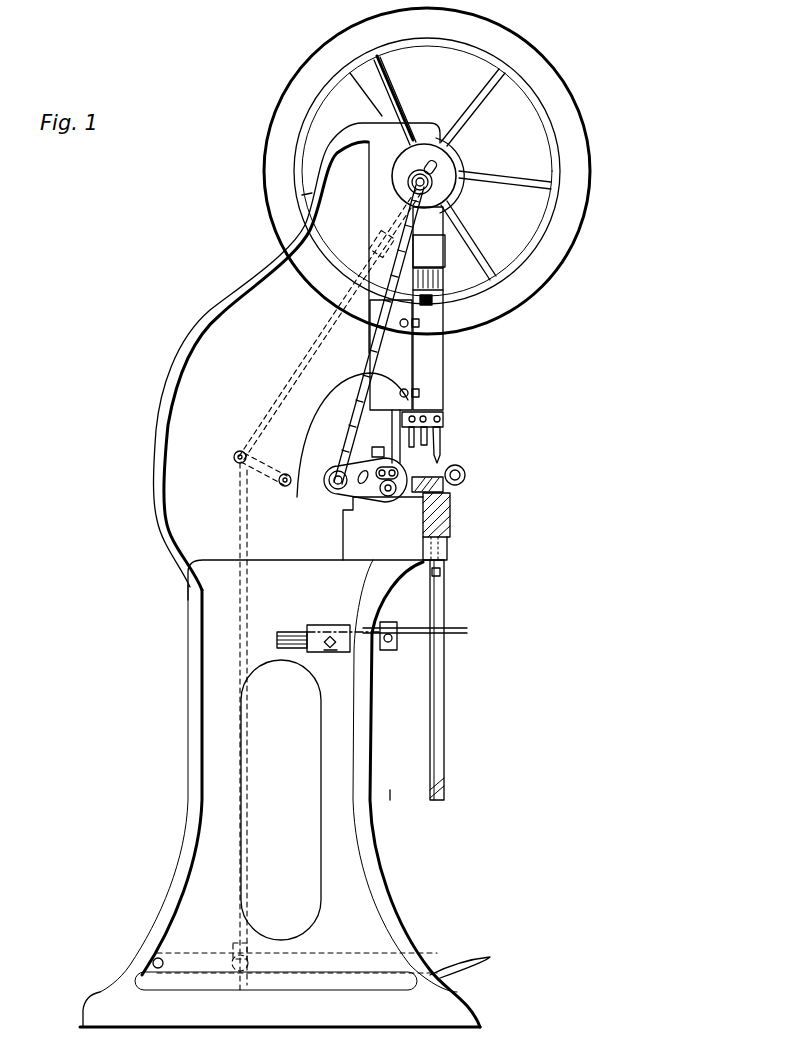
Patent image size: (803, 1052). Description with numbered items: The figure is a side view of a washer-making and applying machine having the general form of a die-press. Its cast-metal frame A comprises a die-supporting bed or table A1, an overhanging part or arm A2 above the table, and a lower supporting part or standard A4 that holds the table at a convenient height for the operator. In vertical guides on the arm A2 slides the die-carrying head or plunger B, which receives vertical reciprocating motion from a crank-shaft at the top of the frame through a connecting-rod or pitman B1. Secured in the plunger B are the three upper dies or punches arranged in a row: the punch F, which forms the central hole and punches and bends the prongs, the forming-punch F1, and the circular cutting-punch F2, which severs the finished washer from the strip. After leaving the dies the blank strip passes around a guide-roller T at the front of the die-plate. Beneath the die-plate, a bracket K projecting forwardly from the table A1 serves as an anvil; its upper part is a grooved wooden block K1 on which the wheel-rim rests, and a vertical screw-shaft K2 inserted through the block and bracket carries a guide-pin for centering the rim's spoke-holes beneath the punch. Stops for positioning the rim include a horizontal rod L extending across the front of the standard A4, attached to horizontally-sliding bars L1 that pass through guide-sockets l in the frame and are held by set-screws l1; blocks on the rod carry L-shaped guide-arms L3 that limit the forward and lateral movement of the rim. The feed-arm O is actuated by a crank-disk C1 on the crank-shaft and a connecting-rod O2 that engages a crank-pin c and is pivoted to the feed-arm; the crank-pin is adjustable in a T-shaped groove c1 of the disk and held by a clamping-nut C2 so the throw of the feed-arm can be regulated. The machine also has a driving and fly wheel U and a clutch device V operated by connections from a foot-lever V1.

The driving and fly wheel U is at (547, 86).
The crank-disk C1 is at (440, 163).
The T-shaped groove c1 is at (420, 164).
The crank-pin c is at (429, 183).
The clamping-nut C2 is at (406, 187).
The frame A is at (280, 575).
The die-supporting bed or table A1 is at (383, 528).
The overhanging part or arm A2 is at (394, 381).
The lower supporting part or standard A4 is at (396, 813).
The connecting-rod O2 is at (378, 350).
The clutch device V is at (383, 230).
The feed-arm O is at (365, 480).
The die-carrying head or plunger B is at (438, 390).
The connecting-rod or pitman B1 is at (429, 251).
The circular cutting-punch F2 is at (438, 438).
The forming-punch F1 is at (430, 442).
The punch F is at (441, 449).
The guide-roller T is at (461, 473).
The wooden block K1 is at (452, 518).
The bracket K is at (448, 543).
The screw-shaft K2 is at (446, 567).
The horizontally-sliding bars L1 is at (302, 632).
The guide-sockets l is at (343, 628).
The set-screws l1 is at (324, 652).
The L-shaped guide-arms L3 is at (425, 615).
The horizontal rod L is at (393, 644).
The foot-lever V1 is at (477, 958).